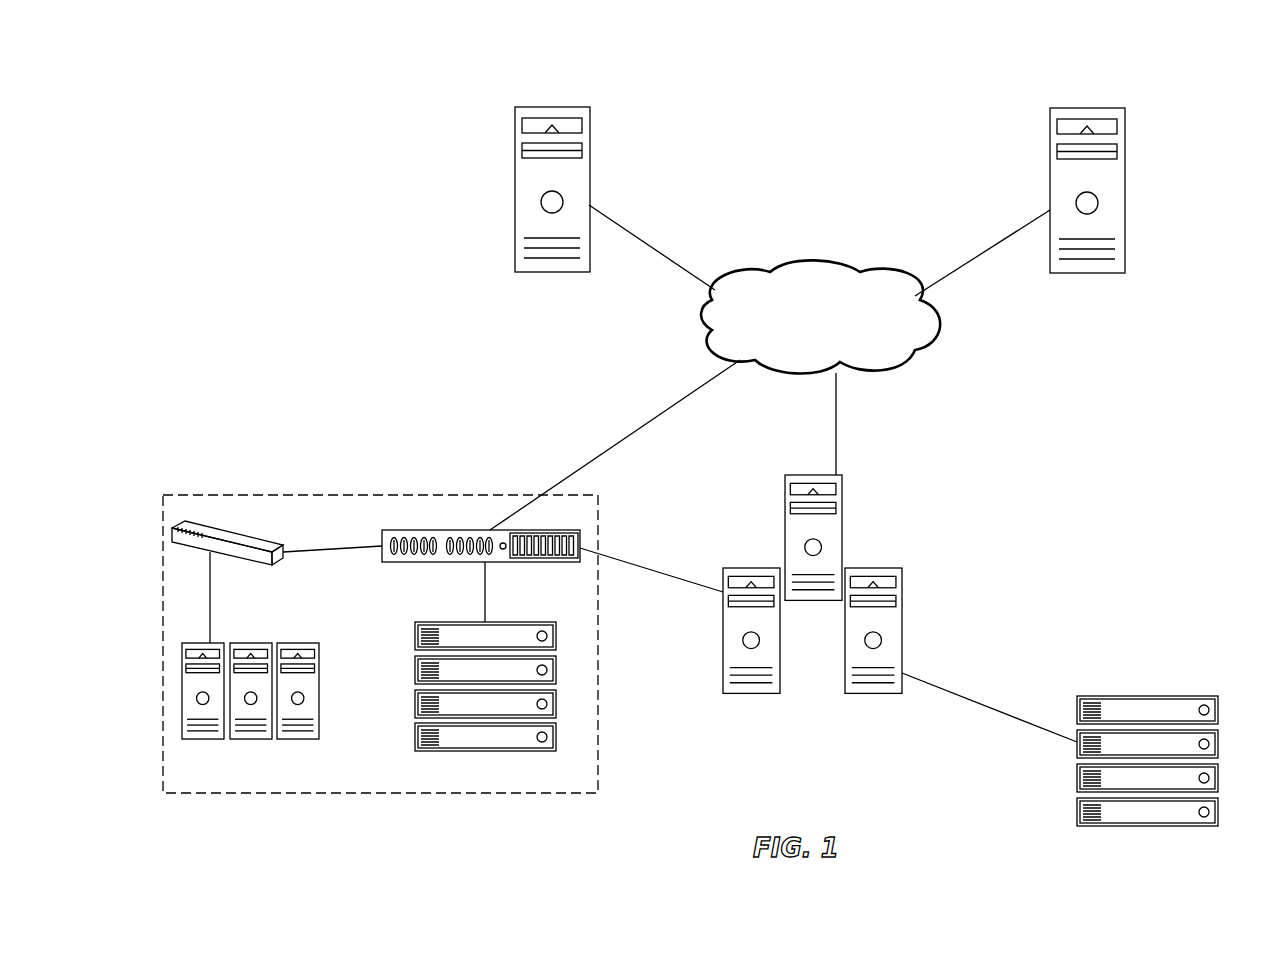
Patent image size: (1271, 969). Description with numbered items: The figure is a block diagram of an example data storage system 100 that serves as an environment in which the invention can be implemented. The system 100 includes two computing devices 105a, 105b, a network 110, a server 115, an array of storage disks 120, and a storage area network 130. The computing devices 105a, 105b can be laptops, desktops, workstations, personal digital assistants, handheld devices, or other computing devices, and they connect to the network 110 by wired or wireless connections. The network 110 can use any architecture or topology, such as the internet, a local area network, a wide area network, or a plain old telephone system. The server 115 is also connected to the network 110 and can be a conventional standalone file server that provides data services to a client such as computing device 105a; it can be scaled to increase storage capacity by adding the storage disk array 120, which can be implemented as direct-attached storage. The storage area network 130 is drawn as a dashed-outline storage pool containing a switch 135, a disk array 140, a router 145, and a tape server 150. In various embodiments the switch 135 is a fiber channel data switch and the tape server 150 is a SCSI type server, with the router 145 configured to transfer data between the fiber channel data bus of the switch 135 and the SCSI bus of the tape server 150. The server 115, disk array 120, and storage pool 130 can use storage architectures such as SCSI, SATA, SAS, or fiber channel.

The data storage system 100 is at (366, 62).
The computing device 105a is at (515, 232).
The computing device 105b is at (1126, 232).
The network 110 is at (838, 328).
The server 115 is at (757, 568).
The array of storage disks 120 is at (1200, 696).
The storage area network 130 is at (338, 495).
The switch 135 is at (455, 530).
The disk array 140 is at (455, 753).
The router 145 is at (218, 528).
The tape server 150 is at (183, 670).